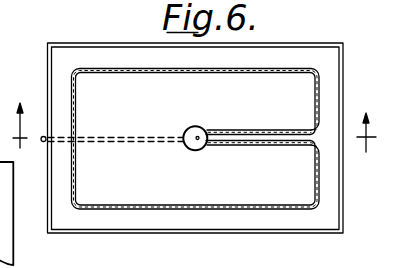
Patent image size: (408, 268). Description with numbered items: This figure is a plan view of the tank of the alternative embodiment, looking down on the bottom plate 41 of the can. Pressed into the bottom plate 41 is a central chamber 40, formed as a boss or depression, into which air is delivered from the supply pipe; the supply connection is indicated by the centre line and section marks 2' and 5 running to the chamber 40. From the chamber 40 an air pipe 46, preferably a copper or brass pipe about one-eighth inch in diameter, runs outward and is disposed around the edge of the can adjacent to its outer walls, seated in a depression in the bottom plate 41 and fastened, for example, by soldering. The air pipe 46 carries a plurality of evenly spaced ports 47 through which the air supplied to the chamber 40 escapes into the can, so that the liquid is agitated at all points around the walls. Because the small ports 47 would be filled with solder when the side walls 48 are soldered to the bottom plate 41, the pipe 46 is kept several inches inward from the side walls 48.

The central chamber 40 is at (196, 133).
The bottom plate 41 is at (143, 119).
The air pipe 46 is at (242, 145).
The ports 47 is at (240, 130).
The side walls 48 is at (98, 236).
The pivot axis centre line 2' is at (104, 155).
The section line 5- 5 is at (193, 127).